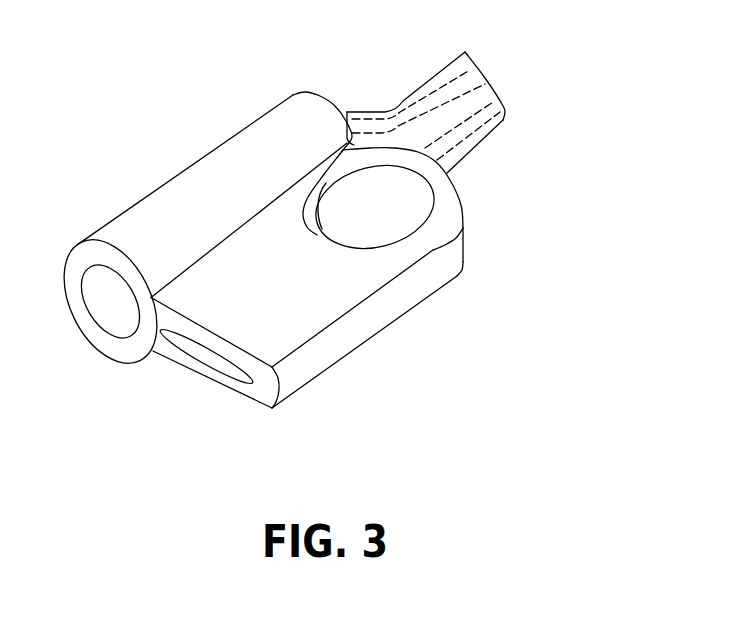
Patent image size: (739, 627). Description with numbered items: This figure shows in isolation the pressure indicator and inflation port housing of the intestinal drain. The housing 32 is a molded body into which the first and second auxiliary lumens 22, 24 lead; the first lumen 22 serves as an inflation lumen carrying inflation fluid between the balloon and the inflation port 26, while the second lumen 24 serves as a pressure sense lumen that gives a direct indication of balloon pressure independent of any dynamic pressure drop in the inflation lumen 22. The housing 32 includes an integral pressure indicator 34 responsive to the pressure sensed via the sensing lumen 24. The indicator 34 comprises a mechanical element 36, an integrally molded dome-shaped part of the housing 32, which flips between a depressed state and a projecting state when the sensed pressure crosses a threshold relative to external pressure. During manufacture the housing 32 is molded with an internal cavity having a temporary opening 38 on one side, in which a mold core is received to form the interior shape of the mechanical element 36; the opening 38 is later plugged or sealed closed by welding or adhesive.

The first auxiliary lumen 22 is at (472, 75).
The second auxiliary lumen 24 is at (490, 100).
The inflation port 26 is at (107, 317).
The housing 32 is at (178, 129).
The pressure indicator 34 is at (321, 261).
The mechanical element 36 is at (390, 223).
The temporary opening 38 is at (217, 357).